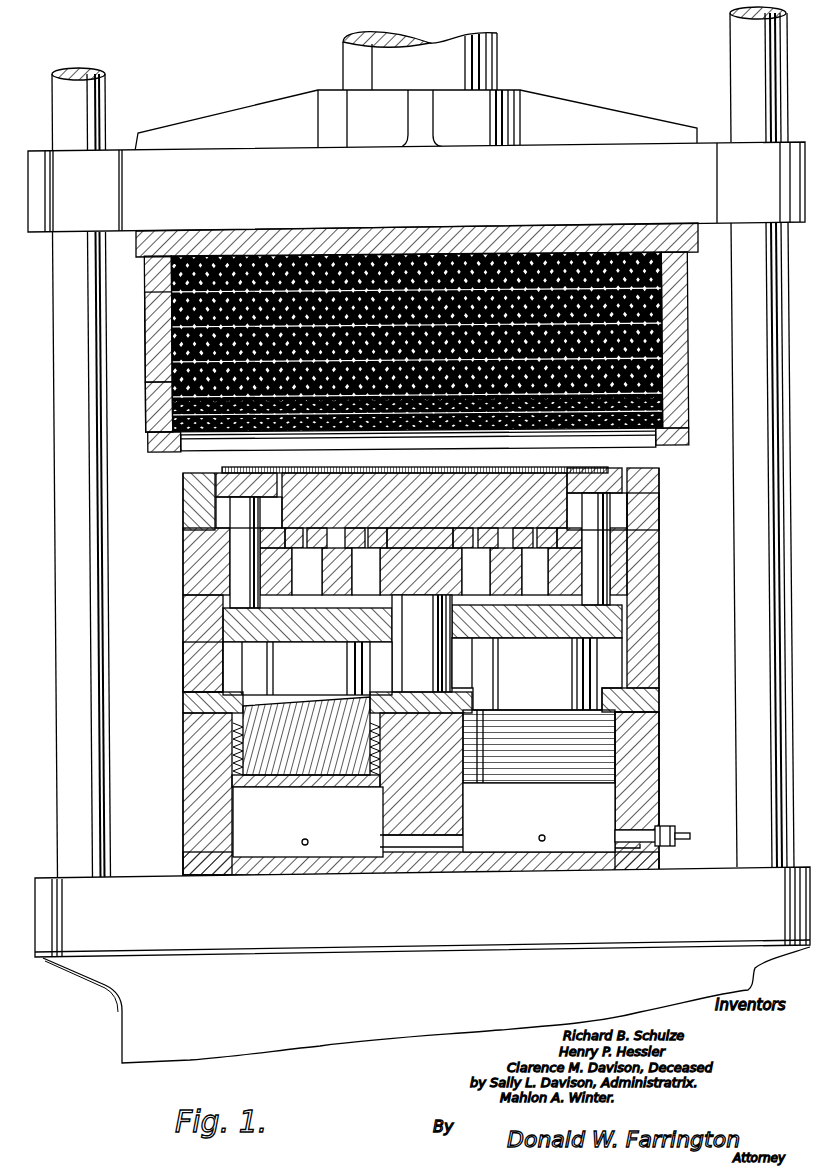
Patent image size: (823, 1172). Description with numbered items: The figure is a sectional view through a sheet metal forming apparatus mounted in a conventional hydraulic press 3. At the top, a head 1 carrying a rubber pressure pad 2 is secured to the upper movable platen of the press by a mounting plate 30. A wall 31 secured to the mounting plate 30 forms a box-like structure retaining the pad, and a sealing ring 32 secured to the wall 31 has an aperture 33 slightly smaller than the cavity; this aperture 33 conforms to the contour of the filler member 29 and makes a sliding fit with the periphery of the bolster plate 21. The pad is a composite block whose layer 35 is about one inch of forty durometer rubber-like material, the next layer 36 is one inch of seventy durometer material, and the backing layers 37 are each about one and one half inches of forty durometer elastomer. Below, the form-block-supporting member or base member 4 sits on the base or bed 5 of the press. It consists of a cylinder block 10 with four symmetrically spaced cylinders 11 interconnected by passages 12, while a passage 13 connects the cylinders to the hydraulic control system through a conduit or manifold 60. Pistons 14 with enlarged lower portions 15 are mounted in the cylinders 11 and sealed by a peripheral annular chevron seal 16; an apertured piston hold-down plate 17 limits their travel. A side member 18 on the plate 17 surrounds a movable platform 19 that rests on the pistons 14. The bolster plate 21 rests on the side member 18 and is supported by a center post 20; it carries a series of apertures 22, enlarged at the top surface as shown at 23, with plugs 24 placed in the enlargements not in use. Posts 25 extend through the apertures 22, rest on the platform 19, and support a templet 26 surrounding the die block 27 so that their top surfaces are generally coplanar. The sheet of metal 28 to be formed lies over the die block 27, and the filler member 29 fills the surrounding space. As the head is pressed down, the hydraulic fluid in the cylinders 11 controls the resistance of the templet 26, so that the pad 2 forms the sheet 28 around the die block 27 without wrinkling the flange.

The head 1 is at (690, 334).
The rubber pressure pad 2 is at (690, 304).
The hydraulic press 3 is at (632, 194).
The form-block-supporting member 4 is at (668, 658).
The base or bed 5 is at (694, 935).
The cylinder block 10 is at (640, 786).
The cylinders 11 is at (600, 809).
The passages 12 is at (307, 840).
The passage 13 is at (636, 842).
The pistons 14 is at (250, 687).
The enlarged lower portions 15 is at (236, 774).
The chevron seal 16 is at (257, 759).
The piston hold-down plate 17 is at (190, 716).
The side member 18 is at (190, 665).
The movable platform 19 is at (235, 628).
The center post 20 is at (440, 681).
The bolster plate 21 is at (200, 590).
The apertures 22 is at (313, 590).
The enlarged portion 23 is at (612, 545).
The plugs 24 is at (568, 522).
The posts 25 is at (240, 538).
The templet 26 is at (197, 493).
The die block 27 is at (312, 484).
The sheet of metal 28 is at (606, 469).
The filler member 29 is at (200, 530).
The mounting plate 30 is at (705, 237).
The wall 31 is at (690, 368).
The sealing ring 32 is at (688, 438).
The aperture 33 is at (195, 449).
The layer 35 is at (150, 433).
The layer 36 is at (172, 405).
The layers 37 is at (172, 306).
The conduit or manifold 60 is at (674, 836).